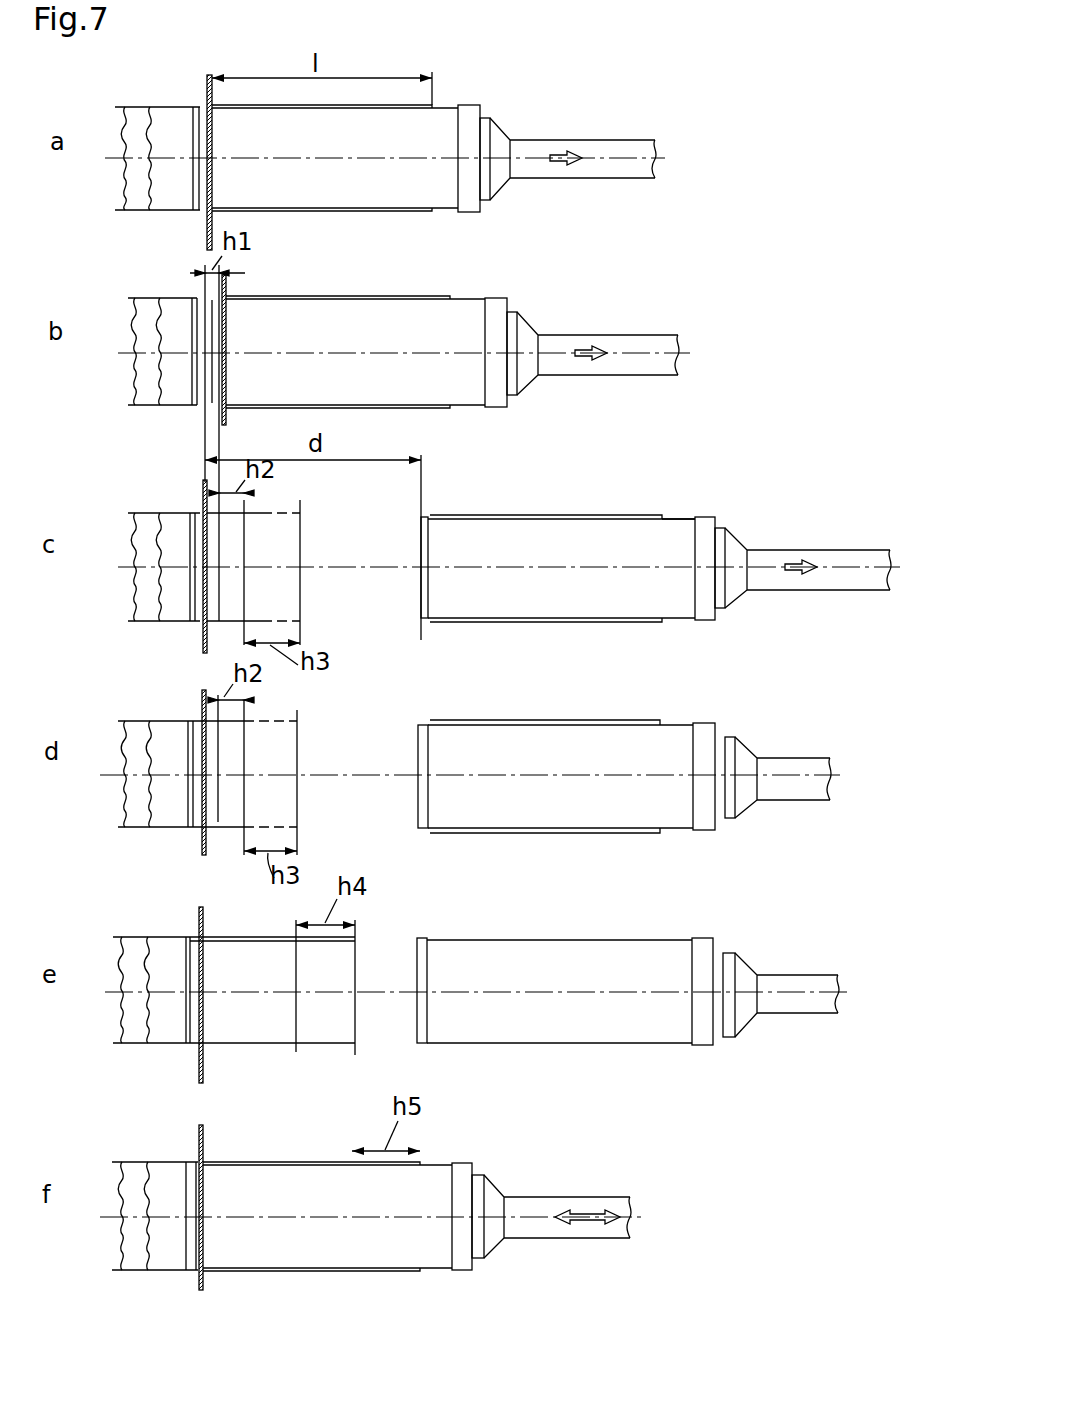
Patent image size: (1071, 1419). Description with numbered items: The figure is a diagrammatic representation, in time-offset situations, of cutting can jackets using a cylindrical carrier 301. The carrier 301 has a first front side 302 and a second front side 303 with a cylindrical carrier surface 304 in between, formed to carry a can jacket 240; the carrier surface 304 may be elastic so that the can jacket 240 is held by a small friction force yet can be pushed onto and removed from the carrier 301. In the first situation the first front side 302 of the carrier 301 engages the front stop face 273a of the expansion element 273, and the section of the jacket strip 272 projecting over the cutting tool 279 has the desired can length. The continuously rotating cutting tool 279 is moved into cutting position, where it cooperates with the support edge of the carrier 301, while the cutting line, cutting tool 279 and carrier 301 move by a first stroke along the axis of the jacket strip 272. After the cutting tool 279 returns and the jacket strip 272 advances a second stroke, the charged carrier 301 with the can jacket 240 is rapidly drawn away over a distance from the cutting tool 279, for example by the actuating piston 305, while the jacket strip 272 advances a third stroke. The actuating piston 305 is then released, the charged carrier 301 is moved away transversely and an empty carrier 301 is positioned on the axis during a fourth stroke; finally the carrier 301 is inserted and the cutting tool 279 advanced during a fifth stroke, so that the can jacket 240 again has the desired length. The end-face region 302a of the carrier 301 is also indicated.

The jacket strip 272 is at (135, 103).
The expansion element 273 is at (165, 182).
The front stop face 273a is at (198, 595).
The cutting tool 279 is at (203, 92).
The can jacket 240 is at (346, 214).
The cylindrical carrier 301 is at (447, 104).
The first front side 302 is at (420, 541).
The end face of cap 302a is at (421, 626).
The second front side 303 is at (721, 524).
The cylindrical carrier surface 304 is at (673, 516).
The actuating piston 305 is at (584, 137).